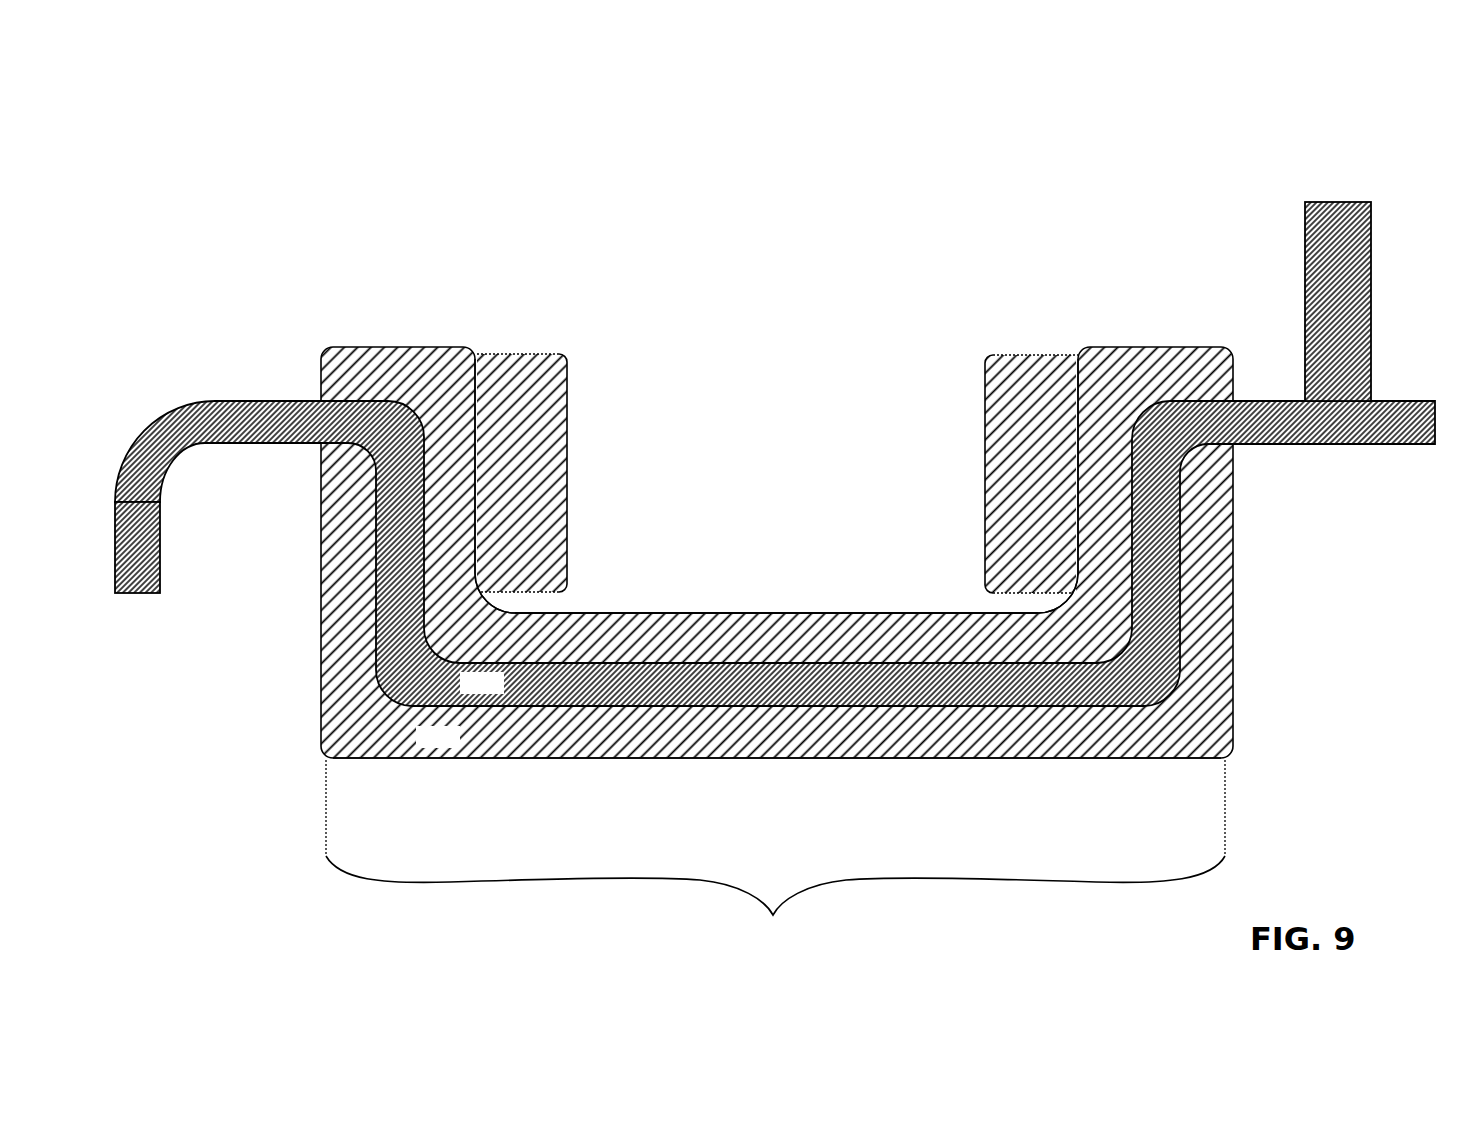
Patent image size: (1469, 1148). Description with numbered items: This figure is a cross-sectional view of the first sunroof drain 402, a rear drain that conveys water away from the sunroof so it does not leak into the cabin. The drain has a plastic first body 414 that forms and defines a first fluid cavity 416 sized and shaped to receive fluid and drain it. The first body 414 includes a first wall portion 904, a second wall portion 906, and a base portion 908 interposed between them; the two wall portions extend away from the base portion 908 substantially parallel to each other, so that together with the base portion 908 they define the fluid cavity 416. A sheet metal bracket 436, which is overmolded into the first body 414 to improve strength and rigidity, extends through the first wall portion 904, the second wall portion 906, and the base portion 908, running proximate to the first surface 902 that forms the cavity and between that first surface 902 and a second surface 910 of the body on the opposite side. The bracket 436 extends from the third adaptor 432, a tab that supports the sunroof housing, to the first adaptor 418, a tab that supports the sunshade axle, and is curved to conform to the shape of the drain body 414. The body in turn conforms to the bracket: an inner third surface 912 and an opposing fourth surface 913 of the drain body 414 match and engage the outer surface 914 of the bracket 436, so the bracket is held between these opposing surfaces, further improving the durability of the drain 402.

The first sunroof drain 402 is at (784, 500).
The first body 414 is at (420, 748).
The first fluid cavity 416 is at (688, 392).
The first adaptor 418 is at (160, 594).
The third adaptor 432 is at (1435, 445).
The bracket 436 is at (464, 694).
The first surface 902 is at (740, 613).
The first wall portion 904 is at (568, 473).
The second wall portion 906 is at (985, 473).
The base portion 908 is at (773, 915).
The second surface 910 is at (607, 759).
The third surface 912 is at (937, 666).
The fourth surface 913 is at (888, 703).
The surface of the bracket 914 is at (845, 708).